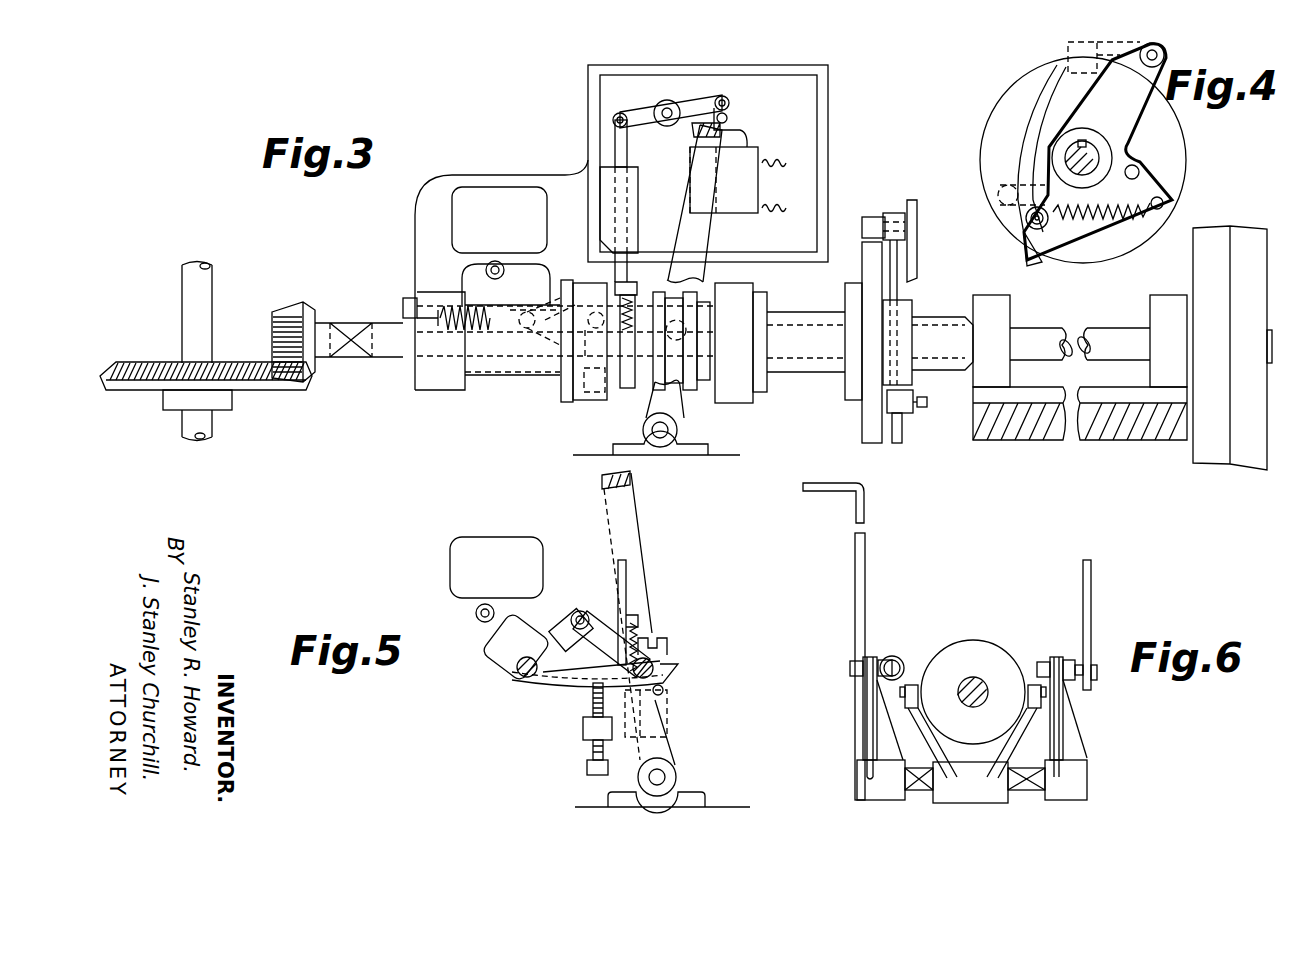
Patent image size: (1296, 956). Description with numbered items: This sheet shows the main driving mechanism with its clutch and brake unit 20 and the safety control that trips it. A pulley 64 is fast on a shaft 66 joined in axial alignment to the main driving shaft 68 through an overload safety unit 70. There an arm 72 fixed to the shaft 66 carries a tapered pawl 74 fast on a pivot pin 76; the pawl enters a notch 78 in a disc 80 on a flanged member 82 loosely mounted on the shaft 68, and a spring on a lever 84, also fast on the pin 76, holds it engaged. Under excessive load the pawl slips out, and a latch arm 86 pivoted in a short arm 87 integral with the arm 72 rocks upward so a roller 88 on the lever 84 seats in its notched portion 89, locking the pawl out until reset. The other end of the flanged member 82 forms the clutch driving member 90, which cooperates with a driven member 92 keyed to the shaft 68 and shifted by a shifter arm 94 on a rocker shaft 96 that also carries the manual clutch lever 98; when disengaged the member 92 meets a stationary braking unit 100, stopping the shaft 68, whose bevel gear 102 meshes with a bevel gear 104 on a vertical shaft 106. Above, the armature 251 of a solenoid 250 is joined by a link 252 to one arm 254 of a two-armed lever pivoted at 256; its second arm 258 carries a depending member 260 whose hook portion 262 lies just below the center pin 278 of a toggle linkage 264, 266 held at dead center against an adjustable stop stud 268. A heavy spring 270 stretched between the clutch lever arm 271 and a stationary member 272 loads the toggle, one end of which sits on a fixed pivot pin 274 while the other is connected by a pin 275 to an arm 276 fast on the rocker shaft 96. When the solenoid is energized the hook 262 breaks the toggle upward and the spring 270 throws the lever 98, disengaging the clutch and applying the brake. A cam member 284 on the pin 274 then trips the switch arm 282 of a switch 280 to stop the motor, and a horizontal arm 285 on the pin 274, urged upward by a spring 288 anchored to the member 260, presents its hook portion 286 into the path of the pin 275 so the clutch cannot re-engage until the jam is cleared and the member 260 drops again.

In FIG. 3, the clutch and brake unit 20 is at (562, 449).
In FIG. 3, the pulley 64 is at (1246, 235).
In FIG. 3, the shaft 66 is at (1030, 330).
In FIG. 4, the shaft 66 is at (1115, 128).
In FIG. 3, the main driving shaft 68 is at (360, 358).
In FIG. 6, the main driving shaft 68 is at (976, 680).
In FIG. 3, the overload safety unit 70 is at (900, 158).
In FIG. 4, the overload safety unit 70 is at (990, 41).
In FIG. 3, the arm 72 is at (900, 288).
In FIG. 4, the arm 72 is at (1140, 105).
In FIG. 3, the pawl 74 is at (874, 215).
In FIG. 4, the pawl 74 is at (1068, 45).
In FIG. 3, the pivot pin 76 is at (895, 213).
In FIG. 4, the pivot pin 76 is at (1165, 55).
In FIG. 3, the notch 78 is at (868, 250).
In FIG. 4, the notch 78 is at (1068, 72).
In FIG. 3, the disc 80 is at (868, 428).
In FIG. 4, the disc 80 is at (1000, 108).
In FIG. 3, the flanged member 82 is at (812, 302).
In FIG. 4, the flanged member 82 is at (1122, 225).
In FIG. 3, the lever 84 is at (917, 250).
In FIG. 4, the lever 84 is at (1025, 130).
In FIG. 3, the latch arm 86 is at (898, 442).
In FIG. 4, the latch arm 86 is at (1067, 240).
In FIG. 4, the short arm 87 is at (1139, 166).
In FIG. 3, the roller 88 is at (904, 411).
In FIG. 4, the roller 88 is at (1028, 222).
In FIG. 4, the notched portion 89 is at (1026, 252).
In FIG. 3, the driving member 90 is at (741, 360).
In FIG. 3, the driven member 92 is at (697, 300).
In FIG. 5, the shifter arm 94 is at (672, 745).
In FIG. 6, the shifter arm 94 is at (925, 758).
In FIG. 3, the rocker shaft 96 is at (663, 440).
In FIG. 5, the rocker shaft 96 is at (676, 775).
In FIG. 6, the rocker shaft 96 is at (1025, 770).
In FIG. 3, the clutch lever 98 is at (700, 235).
In FIG. 5, the clutch lever 98 is at (640, 522).
In FIG. 6, the clutch lever 98 is at (855, 585).
In FIG. 3, the stationary braking unit 100 is at (600, 395).
In FIG. 3, the bevel gear 102 is at (288, 303).
In FIG. 3, the bevel gear 104 is at (130, 365).
In FIG. 3, the vertical shaft 106 is at (190, 289).
In FIG. 3, the solenoid 250 is at (745, 152).
In FIG. 3, the armature 251 is at (728, 128).
In FIG. 3, the link 252 is at (730, 103).
In FIG. 3, the arm 254 is at (697, 100).
In FIG. 3, the pivot 256 is at (668, 108).
In FIG. 3, the second arm 258 is at (640, 110).
In FIG. 3, the vertical member 260 is at (620, 145).
In FIG. 5, the vertical member 260 is at (627, 572).
In FIG. 6, the vertical member 260 is at (1093, 610).
In FIG. 3, the hook portion 262 is at (585, 360).
In FIG. 5, the hook portion 262 is at (582, 680).
In FIG. 3, the toggle linkage 264 is at (560, 336).
In FIG. 5, the toggle linkage 264 is at (553, 634).
In FIG. 3, the toggle linkage 266 is at (635, 298).
In FIG. 5, the toggle linkage 266 is at (636, 615).
In FIG. 3, the adjustable stop stud 268 is at (588, 392).
In FIG. 5, the adjustable stop stud 268 is at (592, 700).
In FIG. 3, the spring 270 is at (445, 310).
In FIG. 6, the spring 270 is at (915, 633).
In FIG. 6, the clutch lever arm 271 is at (870, 720).
In FIG. 3, the member 272 is at (406, 298).
In FIG. 3, the fixed pivot pin 274 is at (526, 328).
In FIG. 5, the fixed pivot pin 274 is at (516, 673).
In FIG. 3, the pin 275 is at (734, 342).
In FIG. 5, the pin 275 is at (664, 690).
In FIG. 3, the arm 276 is at (734, 319).
In FIG. 6, the arm 276 is at (1065, 720).
In FIG. 3, the toggle center pin 278 is at (580, 292).
In FIG. 5, the toggle center pin 278 is at (581, 610).
In FIG. 3, the switch 280 is at (499, 220).
In FIG. 5, the switch 280 is at (496, 567).
In FIG. 3, the switch arm 282 is at (495, 261).
In FIG. 5, the switch arm 282 is at (489, 604).
In FIG. 3, the cam member 284 is at (538, 272).
In FIG. 5, the cam member 284 is at (490, 640).
In FIG. 3, the arm 285 is at (560, 372).
In FIG. 5, the arm 285 is at (552, 685).
In FIG. 6, the arm 285 is at (1075, 660).
In FIG. 5, the hook portion 286 is at (656, 668).
In FIG. 5, the spring 288 is at (640, 630).